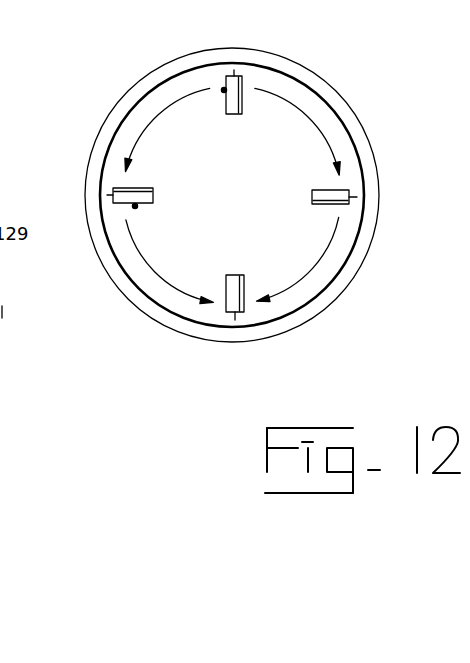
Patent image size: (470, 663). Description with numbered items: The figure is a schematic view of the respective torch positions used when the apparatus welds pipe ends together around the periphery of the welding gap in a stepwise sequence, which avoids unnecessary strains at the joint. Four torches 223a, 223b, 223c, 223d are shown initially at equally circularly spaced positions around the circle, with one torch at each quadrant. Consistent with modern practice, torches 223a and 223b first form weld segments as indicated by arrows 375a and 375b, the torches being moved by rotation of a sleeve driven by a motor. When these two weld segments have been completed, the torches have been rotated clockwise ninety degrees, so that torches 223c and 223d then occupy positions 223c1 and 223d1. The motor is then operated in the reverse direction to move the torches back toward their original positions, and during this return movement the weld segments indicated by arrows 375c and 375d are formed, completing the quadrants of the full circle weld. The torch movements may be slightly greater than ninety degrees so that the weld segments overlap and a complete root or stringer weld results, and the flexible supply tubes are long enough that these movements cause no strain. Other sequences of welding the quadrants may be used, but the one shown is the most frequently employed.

The torch 223a is at (243, 87).
The torch 223b is at (350, 193).
The torch 223c is at (227, 302).
The torch 223d is at (106, 246).
The torch position 223d1 is at (223, 89).
The torch position 223c1 is at (135, 208).
The arrow 375a is at (313, 118).
The arrow 375b is at (328, 251).
The arrow 375c is at (150, 309).
The arrow 375d is at (161, 112).